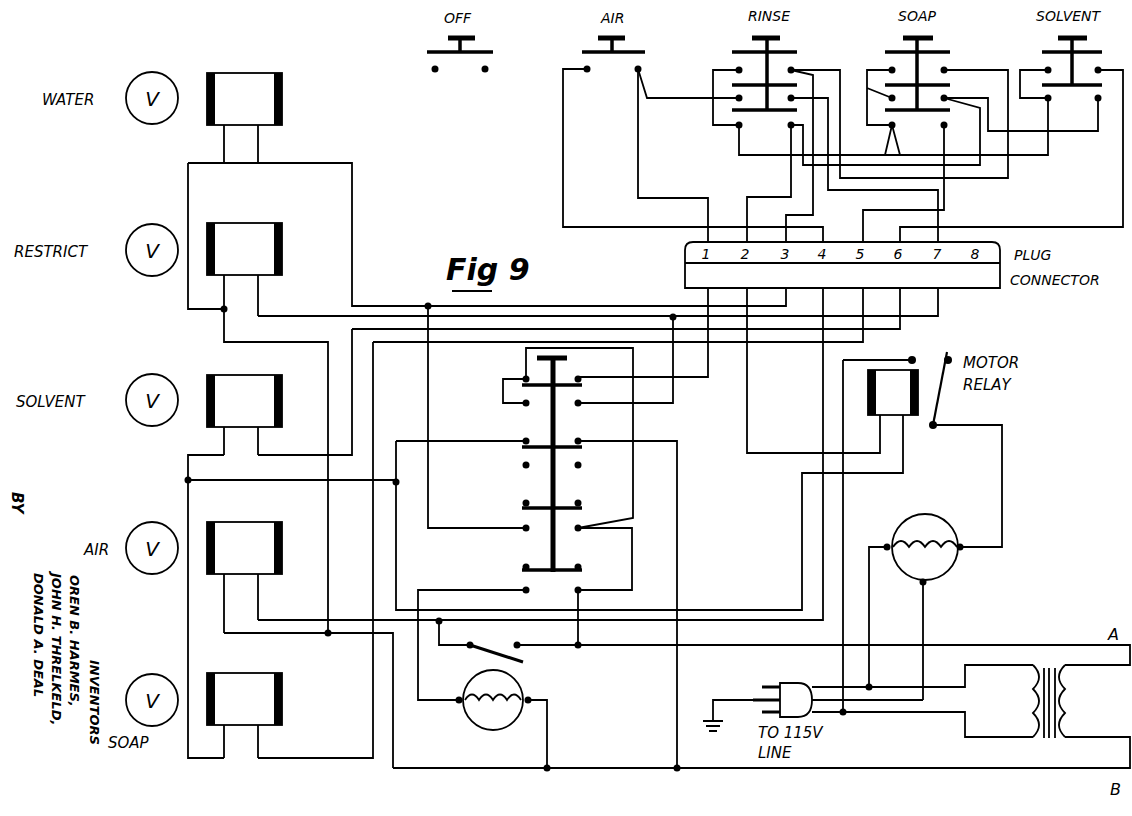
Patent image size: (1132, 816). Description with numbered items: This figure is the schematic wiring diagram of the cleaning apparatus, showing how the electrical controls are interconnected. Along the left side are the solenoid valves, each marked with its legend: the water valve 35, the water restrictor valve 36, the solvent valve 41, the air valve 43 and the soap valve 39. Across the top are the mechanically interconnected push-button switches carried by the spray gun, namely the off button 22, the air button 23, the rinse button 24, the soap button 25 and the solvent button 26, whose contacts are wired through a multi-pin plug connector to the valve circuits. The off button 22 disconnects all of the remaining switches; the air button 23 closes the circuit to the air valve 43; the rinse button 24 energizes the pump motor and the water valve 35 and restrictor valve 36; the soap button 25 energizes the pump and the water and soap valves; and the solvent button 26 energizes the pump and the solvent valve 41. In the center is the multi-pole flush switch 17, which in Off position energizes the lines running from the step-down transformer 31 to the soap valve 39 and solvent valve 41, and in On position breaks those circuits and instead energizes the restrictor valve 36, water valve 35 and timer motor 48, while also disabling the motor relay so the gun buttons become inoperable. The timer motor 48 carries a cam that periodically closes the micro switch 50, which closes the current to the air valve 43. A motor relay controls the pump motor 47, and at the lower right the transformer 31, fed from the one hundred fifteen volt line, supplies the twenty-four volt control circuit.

The flush switch 17 is at (513, 486).
The off button 22 is at (430, 47).
The air button 23 is at (584, 46).
The rinse button 24 is at (730, 53).
The soap button 25 is at (878, 50).
The solvent button 26 is at (1028, 46).
The step-down transformer 31 is at (1041, 746).
The water valve 35 is at (213, 61).
The water restrictor valve 36 is at (182, 205).
The soap valve 39 is at (170, 663).
The solvent valve 41 is at (196, 368).
The air valve 43 is at (174, 513).
The motor 47 is at (958, 567).
The timer motor 48 is at (456, 717).
The switch element 50 is at (529, 653).